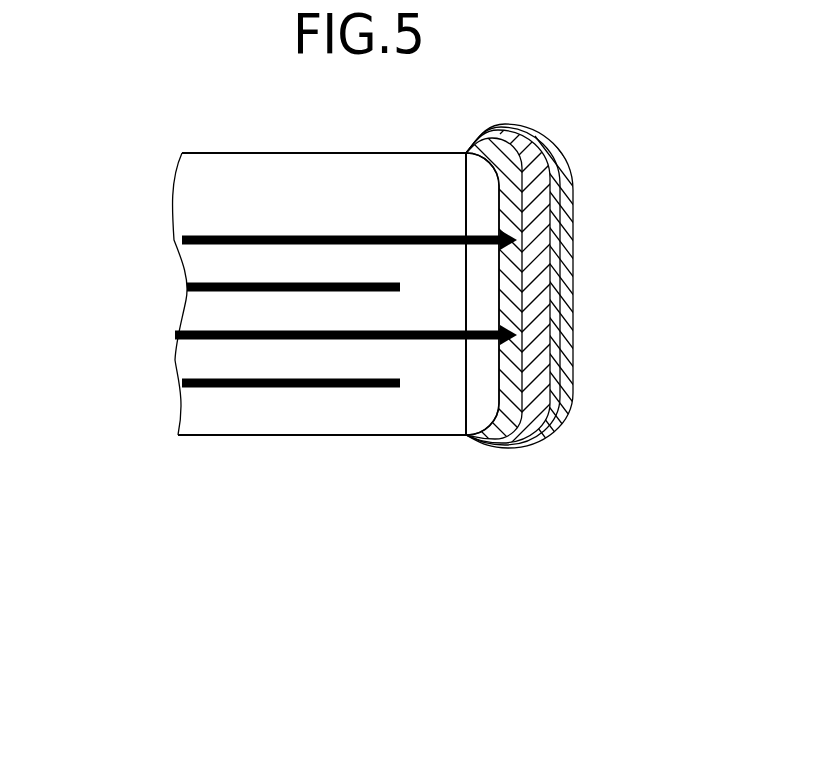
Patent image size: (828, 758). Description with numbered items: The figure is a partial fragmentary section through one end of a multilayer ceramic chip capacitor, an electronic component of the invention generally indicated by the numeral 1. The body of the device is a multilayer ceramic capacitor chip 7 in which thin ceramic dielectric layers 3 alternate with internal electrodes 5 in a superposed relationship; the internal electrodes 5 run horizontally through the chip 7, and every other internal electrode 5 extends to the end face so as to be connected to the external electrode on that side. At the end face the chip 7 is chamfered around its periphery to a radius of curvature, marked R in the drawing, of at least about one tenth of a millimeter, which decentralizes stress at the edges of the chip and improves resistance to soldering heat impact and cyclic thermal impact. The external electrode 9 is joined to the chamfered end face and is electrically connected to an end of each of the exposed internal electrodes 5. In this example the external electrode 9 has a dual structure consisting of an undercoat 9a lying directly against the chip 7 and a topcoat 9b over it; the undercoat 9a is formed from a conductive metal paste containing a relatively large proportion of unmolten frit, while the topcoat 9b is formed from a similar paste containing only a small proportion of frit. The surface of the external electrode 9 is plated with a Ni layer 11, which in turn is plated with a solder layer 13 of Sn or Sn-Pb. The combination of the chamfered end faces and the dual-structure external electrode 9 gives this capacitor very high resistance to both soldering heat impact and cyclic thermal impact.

The chip capacitor 1 is at (162, 128).
The ceramic dielectric layers 3 is at (277, 410).
The internal electrodes 5 is at (213, 342).
The multilayer ceramic capacitor chip 7 is at (248, 144).
The external electrode 9 is at (515, 293).
The undercoat 9a is at (490, 447).
The topcoat 9b is at (525, 281).
The Ni layer 11 is at (553, 168).
The solder layer 13 is at (567, 213).